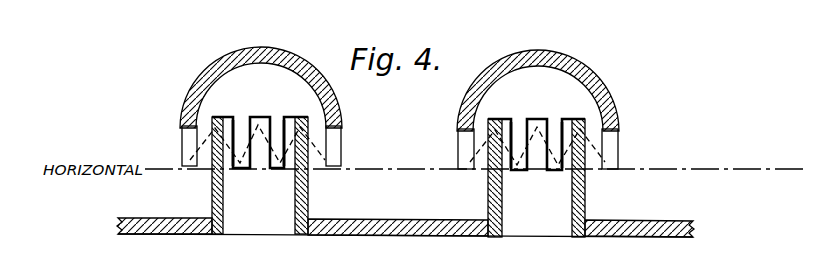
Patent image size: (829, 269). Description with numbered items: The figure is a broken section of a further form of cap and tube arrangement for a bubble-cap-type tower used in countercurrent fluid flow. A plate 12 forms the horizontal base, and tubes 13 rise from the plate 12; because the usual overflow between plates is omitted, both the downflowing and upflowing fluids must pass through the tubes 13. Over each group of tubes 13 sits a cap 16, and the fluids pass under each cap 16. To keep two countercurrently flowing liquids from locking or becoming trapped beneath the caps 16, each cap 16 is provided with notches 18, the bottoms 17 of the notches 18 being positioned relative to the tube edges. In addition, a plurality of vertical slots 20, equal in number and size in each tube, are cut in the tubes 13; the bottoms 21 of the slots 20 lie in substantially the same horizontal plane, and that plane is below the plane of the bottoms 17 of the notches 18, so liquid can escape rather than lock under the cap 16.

The plate 12 is at (395, 236).
The tube 13 is at (307, 204).
The cap 16 is at (239, 51).
The bottom of notch 17 is at (182, 131).
The notch 18 is at (211, 140).
The vertical slot 20 is at (277, 118).
The bottom of slot 21 is at (297, 165).